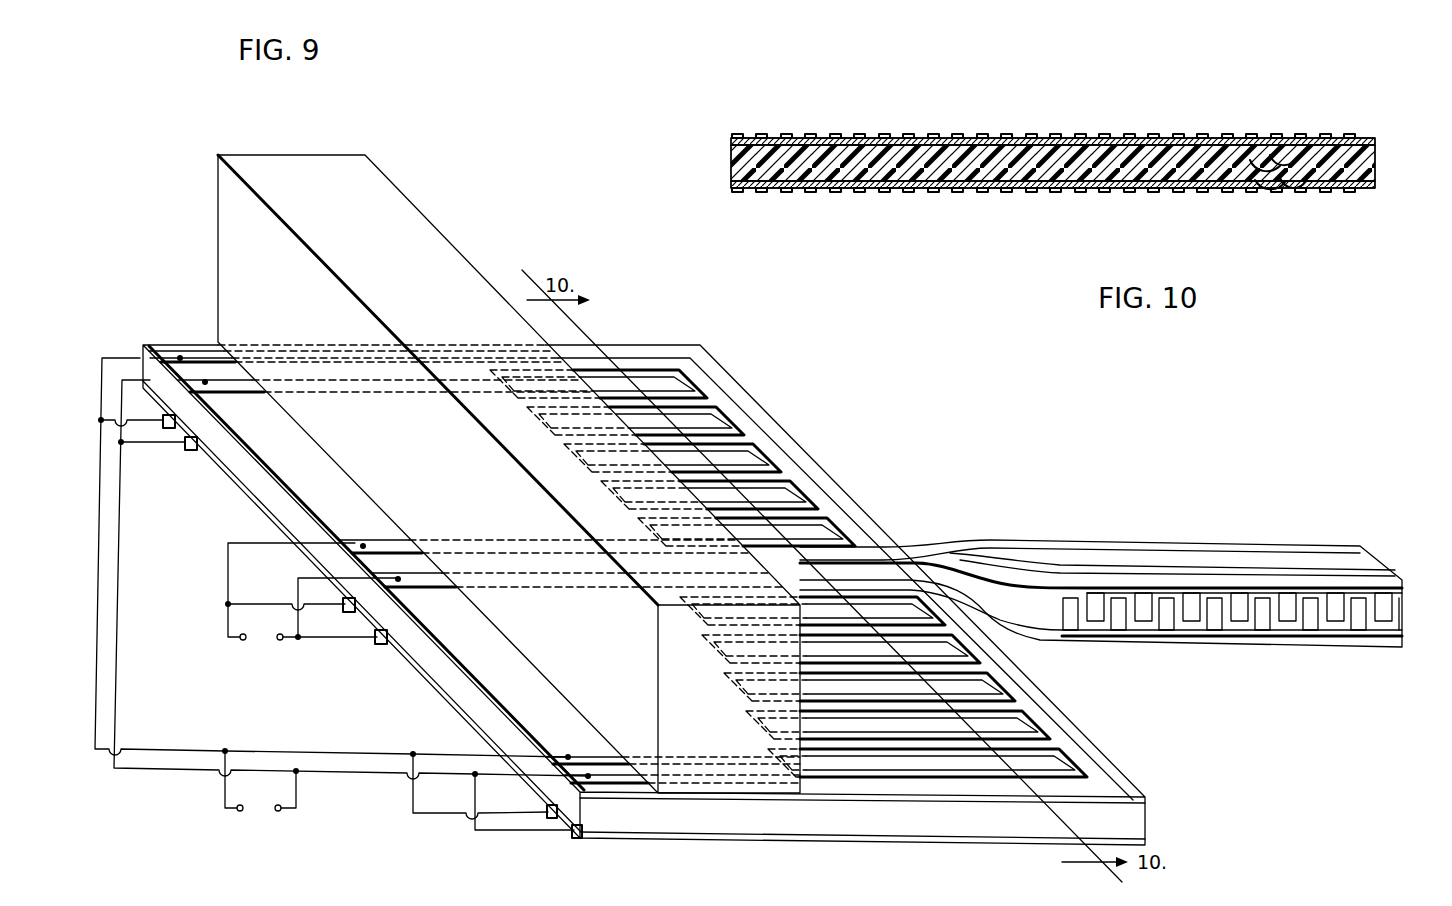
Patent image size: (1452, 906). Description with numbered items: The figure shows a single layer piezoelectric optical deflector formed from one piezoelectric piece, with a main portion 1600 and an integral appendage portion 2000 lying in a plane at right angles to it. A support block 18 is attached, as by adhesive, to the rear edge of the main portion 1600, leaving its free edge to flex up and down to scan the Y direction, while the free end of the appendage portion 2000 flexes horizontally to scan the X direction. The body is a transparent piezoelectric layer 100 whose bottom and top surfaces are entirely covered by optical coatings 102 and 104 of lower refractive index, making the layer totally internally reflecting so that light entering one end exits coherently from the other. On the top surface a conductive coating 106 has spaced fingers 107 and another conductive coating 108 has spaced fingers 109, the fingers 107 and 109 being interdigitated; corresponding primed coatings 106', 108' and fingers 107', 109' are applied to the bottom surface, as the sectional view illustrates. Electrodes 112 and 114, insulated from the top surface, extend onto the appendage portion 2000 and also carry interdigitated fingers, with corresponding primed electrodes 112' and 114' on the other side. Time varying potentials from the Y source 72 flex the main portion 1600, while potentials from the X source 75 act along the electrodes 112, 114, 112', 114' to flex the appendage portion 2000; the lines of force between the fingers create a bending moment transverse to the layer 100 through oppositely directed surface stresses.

In FIG. 9, the support block 18 is at (396, 253).
In FIG. 9, the piezoelectric layer 100 is at (1130, 820).
In FIG. 9, the optical coating 102 is at (920, 840).
In FIG. 9, the optical coating 104 is at (1138, 796).
In FIG. 9, the conductive coating 106 is at (643, 556).
In FIG. 9, the conductive coating 106' is at (340, 639).
In FIG. 9, the conductive coating 108 is at (489, 571).
In FIG. 9, the conductive coating 108' is at (337, 628).
In FIG. 9, the electrode 112 is at (865, 560).
In FIG. 10, the electrode 112 is at (1016, 106).
In FIG. 9, the electrode 112' is at (291, 616).
In FIG. 10, the electrode 112' is at (1008, 216).
In FIG. 9, the electrode 114 is at (886, 626).
In FIG. 10, the electrode 114 is at (1094, 106).
In FIG. 9, the electrode 114' is at (344, 656).
In FIG. 10, the electrode 114' is at (1100, 217).
In FIG. 9, the fingers 107 is at (788, 539).
In FIG. 10, the fingers 107 is at (737, 106).
In FIG. 9, the fingers 109 is at (788, 543).
In FIG. 10, the fingers 109 is at (783, 106).
In FIG. 10, the fingers 107' is at (739, 214).
In FIG. 10, the fingers 109' is at (808, 215).
In FIG. 9, the main portion 1600 is at (896, 476).
In FIG. 9, the appendage portion 2000 is at (1216, 530).
In FIG. 9, the X voltage source Vx(t) 75 is at (245, 674).
In FIG. 9, the Y voltage source Vy(t) 72 is at (266, 842).